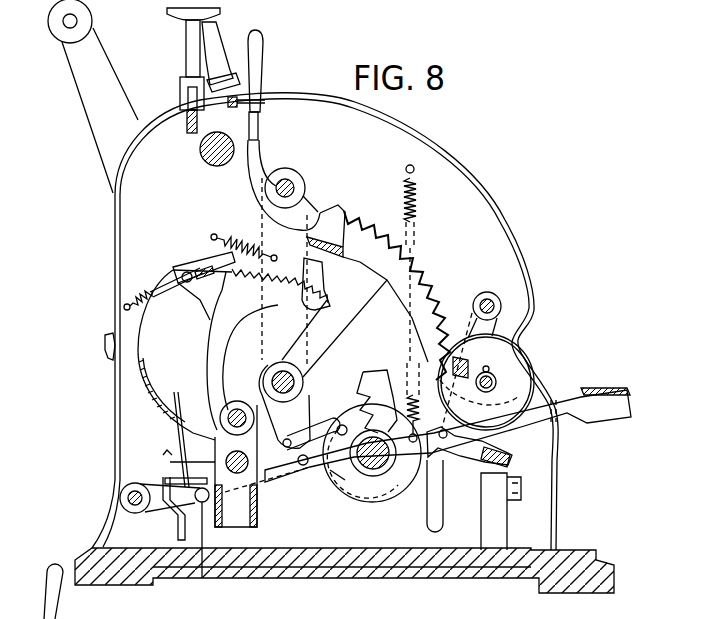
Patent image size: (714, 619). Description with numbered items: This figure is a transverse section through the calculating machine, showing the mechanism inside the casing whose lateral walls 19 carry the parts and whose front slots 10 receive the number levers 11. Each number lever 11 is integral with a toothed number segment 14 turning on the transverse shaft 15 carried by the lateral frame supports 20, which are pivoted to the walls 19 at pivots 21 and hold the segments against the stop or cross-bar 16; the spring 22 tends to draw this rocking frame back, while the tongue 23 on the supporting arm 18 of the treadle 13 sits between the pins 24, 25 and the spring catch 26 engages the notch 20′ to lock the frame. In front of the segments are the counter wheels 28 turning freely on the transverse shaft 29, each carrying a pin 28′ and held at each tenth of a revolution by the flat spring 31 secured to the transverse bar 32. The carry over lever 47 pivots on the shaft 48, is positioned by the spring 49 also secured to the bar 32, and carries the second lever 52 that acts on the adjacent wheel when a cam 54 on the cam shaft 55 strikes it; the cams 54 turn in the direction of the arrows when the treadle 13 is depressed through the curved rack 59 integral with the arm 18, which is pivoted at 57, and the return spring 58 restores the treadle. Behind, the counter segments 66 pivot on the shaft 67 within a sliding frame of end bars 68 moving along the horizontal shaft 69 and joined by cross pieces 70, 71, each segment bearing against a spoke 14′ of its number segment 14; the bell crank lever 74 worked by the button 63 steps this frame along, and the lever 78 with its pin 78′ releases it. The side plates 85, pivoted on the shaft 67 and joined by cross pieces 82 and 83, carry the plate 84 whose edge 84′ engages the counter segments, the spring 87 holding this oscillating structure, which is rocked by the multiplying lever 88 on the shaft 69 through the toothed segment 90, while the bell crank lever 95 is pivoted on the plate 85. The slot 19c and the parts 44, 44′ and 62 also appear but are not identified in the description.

The transverse slot 10 is at (460, 170).
The number lever 11 is at (255, 67).
The carry over bar or treadle 13 is at (607, 384).
The toothed number segment 14 is at (439, 281).
The spoke of the number segment 14′ is at (356, 290).
The transverse shaft 15 is at (280, 375).
The stop or cross-bar 16 is at (333, 237).
The lateral supporting arm 18 is at (590, 418).
The lateral wall 19 is at (507, 250).
The frame slot 19c is at (436, 512).
The lateral frame support 20 is at (300, 270).
The notch or recess 20′ is at (371, 461).
The pivot 21 is at (290, 185).
The spring 22 is at (243, 238).
The tongue 23 is at (305, 425).
The pin 24 is at (286, 421).
The pin 25 is at (349, 405).
The spring catch 26 is at (302, 466).
The counter wheel or drum 28 is at (532, 360).
The pin 28′ is at (480, 370).
The transverse shaft 29 is at (545, 411).
The flat spring 31 is at (524, 447).
The transverse bar 32 is at (501, 503).
The block 44 is at (230, 103).
The pin 44′ is at (265, 102).
The carry over lever 47 is at (497, 322).
The transverse shaft 48 is at (500, 305).
The spring 49 is at (529, 459).
The second lever 52 is at (466, 440).
The cam 54 is at (379, 372).
The cam shaft 55 is at (375, 470).
The pivot 57 is at (122, 497).
The return spring 58 is at (422, 226).
The curved rack 59 is at (392, 480).
The shaft 62 is at (210, 152).
The button 63 is at (185, 14).
The counter segment 66 is at (228, 332).
The shaft 67 is at (228, 414).
The end bar 68 is at (222, 443).
The horizontal shaft 69 is at (224, 458).
The cross piece 70 is at (258, 520).
The cross piece 71 is at (222, 522).
The bell crank lever 74 is at (182, 130).
The lever 78 is at (172, 517).
The pin 78′ is at (170, 480).
The cross piece 82 is at (195, 258).
The cross piece 83 is at (146, 400).
The plate 84 is at (200, 290).
The downwardly projecting edge 84′ is at (284, 278).
The side plate 85 is at (145, 365).
The spring 87 is at (133, 291).
The multiplying lever 88 is at (104, 137).
The toothed segment 90 is at (107, 343).
The bell crank lever 95 is at (178, 392).